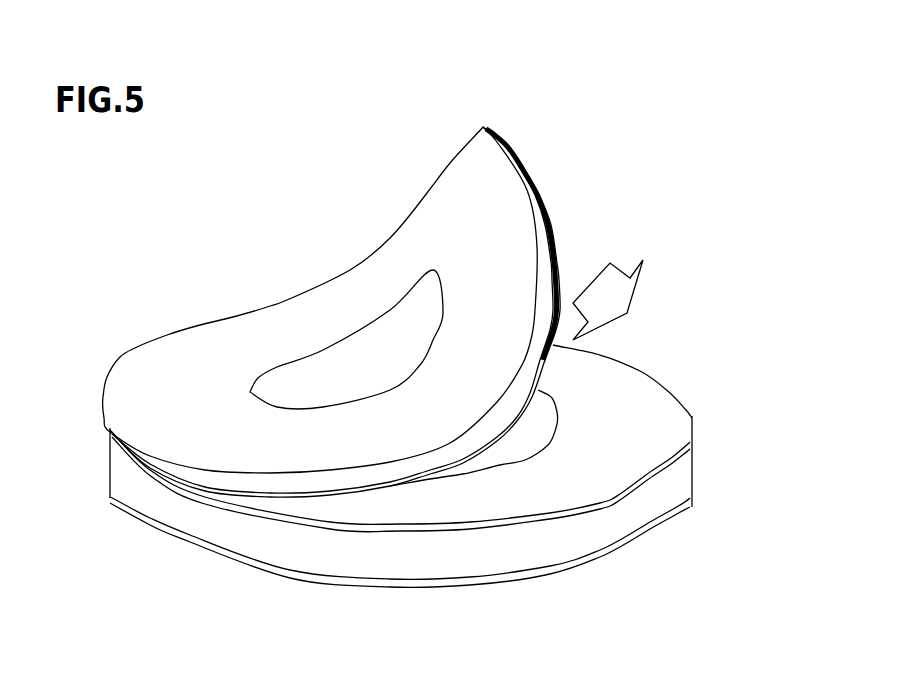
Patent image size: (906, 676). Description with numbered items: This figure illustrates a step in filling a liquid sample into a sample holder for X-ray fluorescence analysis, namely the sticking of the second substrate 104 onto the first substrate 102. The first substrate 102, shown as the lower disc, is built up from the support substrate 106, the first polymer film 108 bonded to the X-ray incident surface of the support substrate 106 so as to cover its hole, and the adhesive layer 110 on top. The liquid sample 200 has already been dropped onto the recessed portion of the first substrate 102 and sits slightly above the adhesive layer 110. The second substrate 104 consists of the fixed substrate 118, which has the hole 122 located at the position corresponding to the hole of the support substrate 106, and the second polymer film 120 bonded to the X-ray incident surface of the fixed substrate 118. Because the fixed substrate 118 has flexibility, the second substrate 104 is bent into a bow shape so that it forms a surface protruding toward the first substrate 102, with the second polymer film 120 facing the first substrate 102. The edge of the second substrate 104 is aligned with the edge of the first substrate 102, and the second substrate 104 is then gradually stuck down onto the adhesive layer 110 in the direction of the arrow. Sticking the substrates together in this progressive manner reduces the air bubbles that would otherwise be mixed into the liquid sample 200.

The first substrate 102 is at (439, 506).
The second substrate 104 is at (421, 291).
The support substrate 106 is at (693, 467).
The first polymer film 108 is at (693, 501).
The adhesive layer 110 is at (693, 417).
The fixed substrate 118 is at (428, 191).
The second polymer film 120 is at (547, 217).
The hole 122 is at (334, 378).
The liquid sample 200 is at (545, 397).